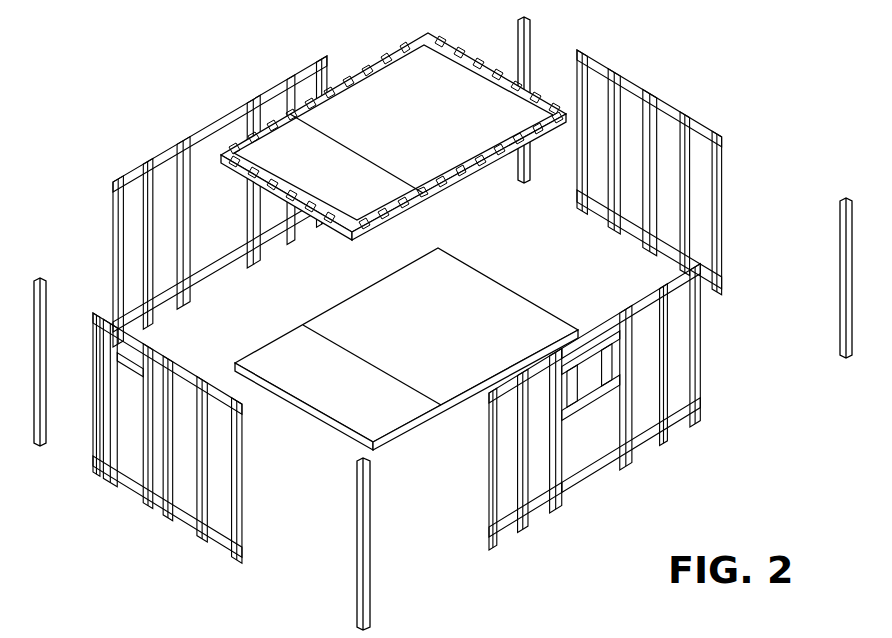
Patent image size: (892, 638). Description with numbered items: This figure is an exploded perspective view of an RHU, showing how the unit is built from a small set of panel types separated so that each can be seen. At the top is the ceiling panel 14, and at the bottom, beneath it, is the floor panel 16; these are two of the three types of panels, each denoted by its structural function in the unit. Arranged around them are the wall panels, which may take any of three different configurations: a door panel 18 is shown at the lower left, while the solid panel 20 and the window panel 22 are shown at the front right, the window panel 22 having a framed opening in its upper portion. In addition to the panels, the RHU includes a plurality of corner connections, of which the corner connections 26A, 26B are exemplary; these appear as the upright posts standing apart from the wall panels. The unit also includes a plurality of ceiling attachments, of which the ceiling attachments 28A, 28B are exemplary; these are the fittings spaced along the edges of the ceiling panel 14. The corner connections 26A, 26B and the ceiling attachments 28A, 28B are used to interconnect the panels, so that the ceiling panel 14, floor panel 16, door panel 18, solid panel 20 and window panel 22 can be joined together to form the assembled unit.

The ceiling panel 14 is at (393, 127).
The floor panel 16 is at (308, 395).
The door panel 18 is at (130, 447).
The solid panel 20 is at (507, 497).
The window panel 22 is at (604, 447).
The corner connection 26A is at (533, 22).
The corner connection 26B is at (840, 248).
The ceiling attachment 28A is at (405, 50).
The ceiling attachment 28B is at (442, 38).